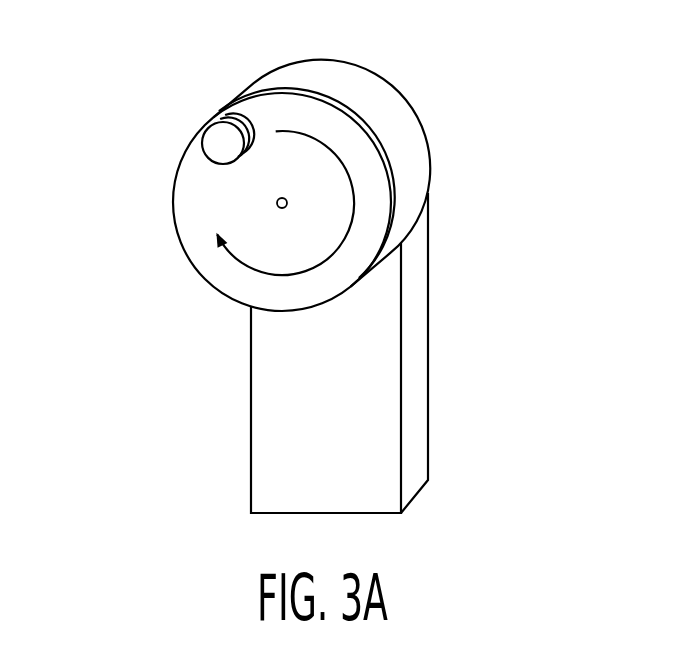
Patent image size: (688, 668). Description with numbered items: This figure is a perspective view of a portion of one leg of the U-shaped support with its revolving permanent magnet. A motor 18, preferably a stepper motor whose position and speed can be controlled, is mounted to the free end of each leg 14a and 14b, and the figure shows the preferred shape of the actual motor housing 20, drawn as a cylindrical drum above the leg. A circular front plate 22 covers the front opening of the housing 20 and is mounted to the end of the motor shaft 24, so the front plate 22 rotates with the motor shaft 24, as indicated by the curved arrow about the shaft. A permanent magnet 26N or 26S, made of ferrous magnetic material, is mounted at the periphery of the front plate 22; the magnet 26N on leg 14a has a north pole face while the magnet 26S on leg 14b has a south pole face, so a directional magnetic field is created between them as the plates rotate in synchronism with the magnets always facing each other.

The leg 14a is at (260, 450).
The leg 14b is at (283, 353).
The motor 18 is at (460, 136).
The housing 20 is at (362, 86).
The front plate 22 is at (218, 272).
The motor shaft 24 is at (276, 203).
The permanent magnet 26N is at (230, 145).
The permanent magnet 26S is at (131, 122).